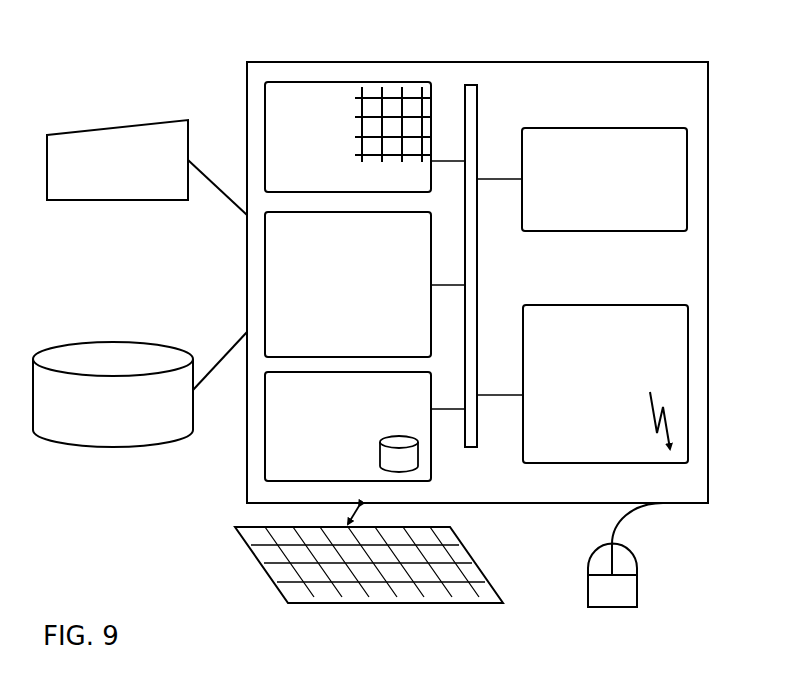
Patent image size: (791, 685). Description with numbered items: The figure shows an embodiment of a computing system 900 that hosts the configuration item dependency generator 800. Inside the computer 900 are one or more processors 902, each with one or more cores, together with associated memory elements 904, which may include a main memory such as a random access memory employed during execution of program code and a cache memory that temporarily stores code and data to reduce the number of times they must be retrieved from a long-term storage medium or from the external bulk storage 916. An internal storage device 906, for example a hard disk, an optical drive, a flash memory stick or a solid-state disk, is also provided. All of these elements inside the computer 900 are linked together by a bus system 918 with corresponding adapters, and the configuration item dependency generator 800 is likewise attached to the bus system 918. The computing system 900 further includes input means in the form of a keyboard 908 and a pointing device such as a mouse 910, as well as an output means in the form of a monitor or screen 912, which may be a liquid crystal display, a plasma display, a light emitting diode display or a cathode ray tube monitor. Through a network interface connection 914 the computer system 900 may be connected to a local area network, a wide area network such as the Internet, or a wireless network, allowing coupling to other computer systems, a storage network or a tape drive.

The computing system 900 is at (124, 63).
The processor 902 is at (582, 179).
The memory elements 904 is at (365, 137).
The configuration item dependency generator 800 is at (365, 284).
The internal storage device 906 is at (365, 426).
The keyboard 908 is at (327, 608).
The mouse 910 is at (647, 554).
The monitor or screen 912 is at (147, 167).
The network interface connection 914 is at (582, 384).
The external bulk storage 916 is at (140, 389).
The bus system 918 is at (478, 467).